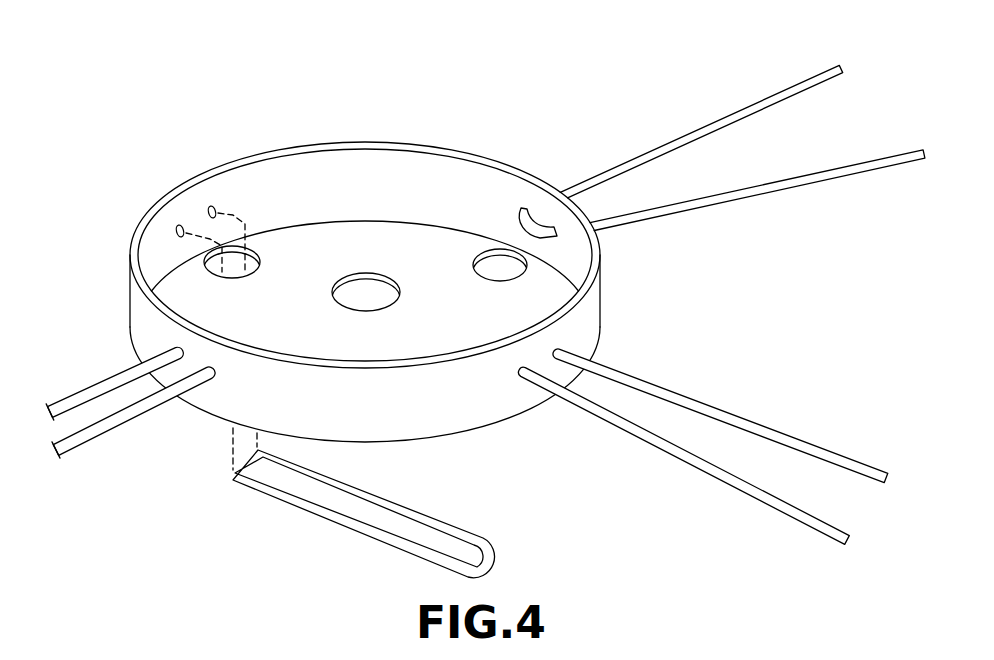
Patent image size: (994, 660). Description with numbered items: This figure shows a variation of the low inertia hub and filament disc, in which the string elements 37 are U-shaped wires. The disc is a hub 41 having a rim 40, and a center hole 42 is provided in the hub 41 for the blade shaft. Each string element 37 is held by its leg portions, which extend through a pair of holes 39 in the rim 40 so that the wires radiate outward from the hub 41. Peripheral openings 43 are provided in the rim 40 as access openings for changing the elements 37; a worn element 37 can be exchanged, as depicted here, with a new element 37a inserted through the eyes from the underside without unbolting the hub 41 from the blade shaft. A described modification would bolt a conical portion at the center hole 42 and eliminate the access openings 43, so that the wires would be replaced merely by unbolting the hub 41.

The string elements 37 is at (720, 118).
The new element 37a is at (393, 547).
The holes 39 is at (208, 205).
The rim 40 is at (372, 165).
The hub 41 is at (475, 429).
The center hole 42 is at (385, 300).
The peripheral openings 43 is at (234, 269).